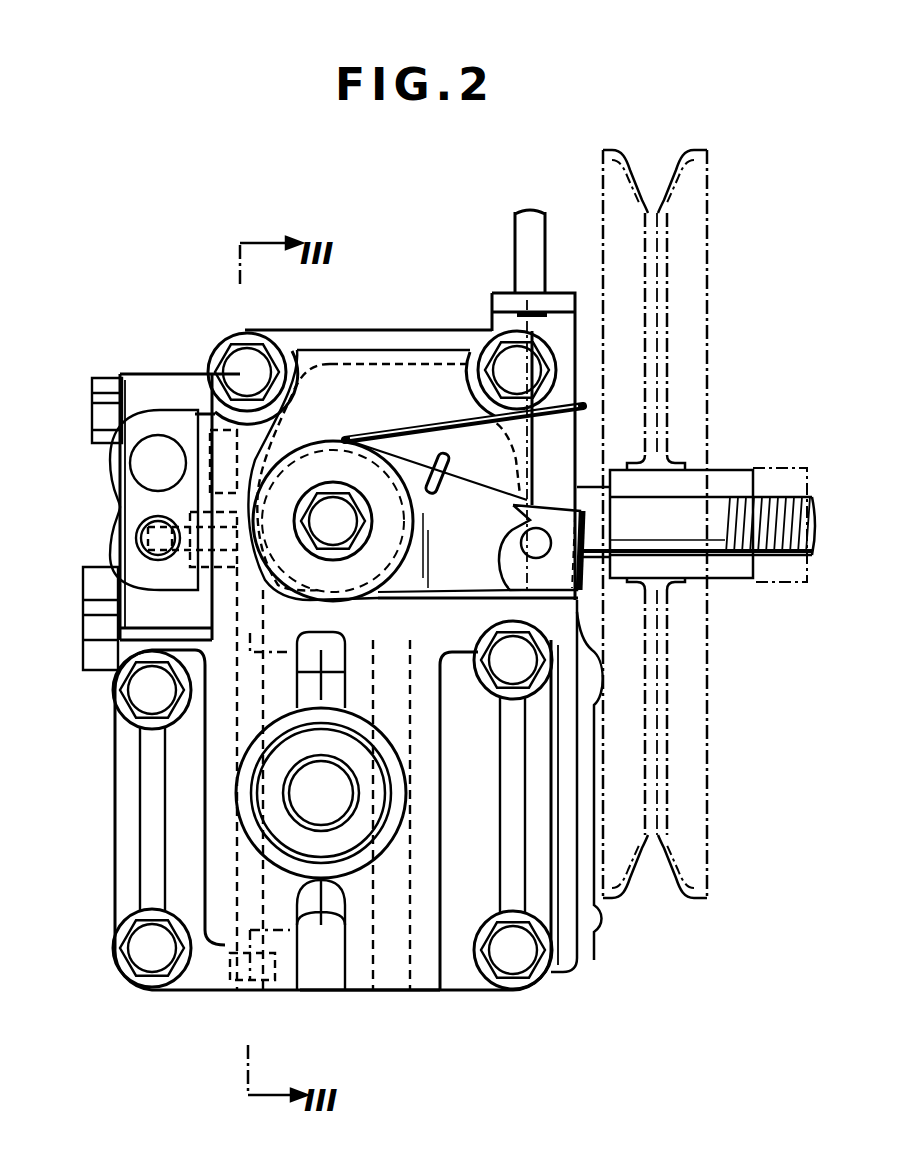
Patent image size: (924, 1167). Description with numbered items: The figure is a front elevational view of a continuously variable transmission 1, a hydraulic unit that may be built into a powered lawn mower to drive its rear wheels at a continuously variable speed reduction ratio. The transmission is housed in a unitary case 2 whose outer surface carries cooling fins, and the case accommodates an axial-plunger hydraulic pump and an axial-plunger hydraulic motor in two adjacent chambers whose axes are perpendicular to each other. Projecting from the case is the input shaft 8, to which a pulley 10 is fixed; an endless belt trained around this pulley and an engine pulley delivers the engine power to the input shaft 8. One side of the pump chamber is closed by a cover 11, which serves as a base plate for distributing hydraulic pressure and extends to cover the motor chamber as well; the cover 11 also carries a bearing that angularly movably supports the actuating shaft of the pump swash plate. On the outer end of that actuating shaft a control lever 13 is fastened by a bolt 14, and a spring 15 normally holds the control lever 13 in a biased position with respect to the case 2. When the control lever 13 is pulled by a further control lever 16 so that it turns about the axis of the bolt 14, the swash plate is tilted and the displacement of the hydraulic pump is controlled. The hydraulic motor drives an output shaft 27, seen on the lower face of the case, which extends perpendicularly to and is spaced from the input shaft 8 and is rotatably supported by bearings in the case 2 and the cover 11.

The continuously variable transmission 1 is at (330, 1010).
The unitary case 2 is at (466, 990).
The input shaft 8 is at (692, 500).
The pulley 10 is at (698, 150).
The cover 11 is at (488, 783).
The control lever 13 is at (463, 490).
The bolt 14 is at (343, 530).
The spring 15 is at (416, 437).
The control lever 16 is at (540, 333).
The output shaft 27 is at (300, 791).